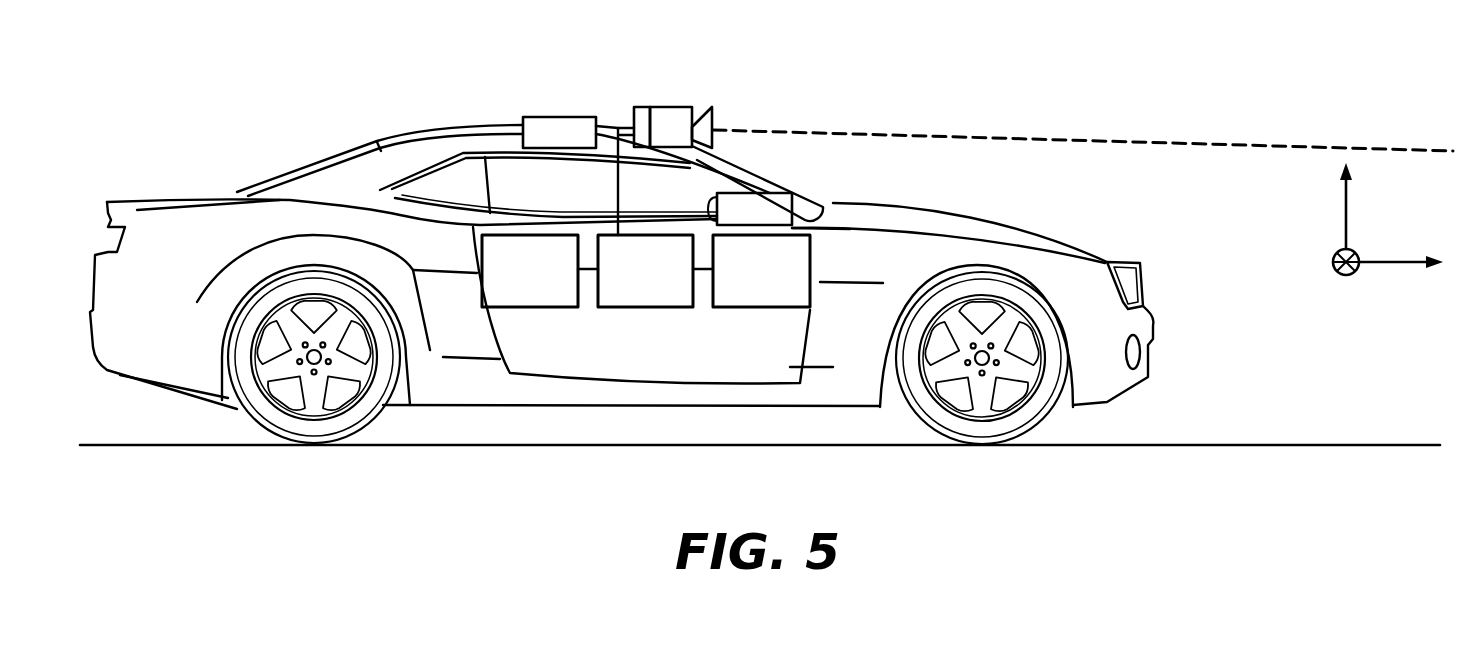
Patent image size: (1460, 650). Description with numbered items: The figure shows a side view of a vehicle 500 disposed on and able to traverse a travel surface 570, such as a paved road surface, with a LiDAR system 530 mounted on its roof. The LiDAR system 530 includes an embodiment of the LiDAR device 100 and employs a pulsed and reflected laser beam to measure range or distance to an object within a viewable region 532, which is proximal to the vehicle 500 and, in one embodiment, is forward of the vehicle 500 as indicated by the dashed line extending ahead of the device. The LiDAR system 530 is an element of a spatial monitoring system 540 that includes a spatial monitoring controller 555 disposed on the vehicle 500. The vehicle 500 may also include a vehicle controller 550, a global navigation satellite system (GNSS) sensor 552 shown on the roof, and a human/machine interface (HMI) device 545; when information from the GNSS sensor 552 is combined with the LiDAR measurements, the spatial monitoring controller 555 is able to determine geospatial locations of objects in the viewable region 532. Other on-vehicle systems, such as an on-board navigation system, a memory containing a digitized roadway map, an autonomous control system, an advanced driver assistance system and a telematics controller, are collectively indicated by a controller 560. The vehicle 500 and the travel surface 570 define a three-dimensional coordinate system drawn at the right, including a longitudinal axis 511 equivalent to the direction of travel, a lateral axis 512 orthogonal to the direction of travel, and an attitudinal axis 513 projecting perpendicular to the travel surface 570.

The LiDAR device 100 is at (705, 100).
The vehicle 500 is at (1033, 210).
The longitudinal axis 511 is at (1449, 306).
The lateral axis 512 is at (1364, 311).
The attitudinal axis 513 is at (1335, 194).
The LiDAR system 530 is at (657, 98).
The viewable region 532 is at (903, 131).
The spatial monitoring system 540 is at (633, 115).
The human/machine interface (HMI) device 545 is at (805, 212).
The vehicle controller 550 is at (552, 283).
The global navigation satellite system (GNSS) sensor 552 is at (522, 123).
The spatial monitoring controller 555 is at (667, 283).
The controller 560 is at (783, 283).
The travel surface 570 is at (1233, 444).